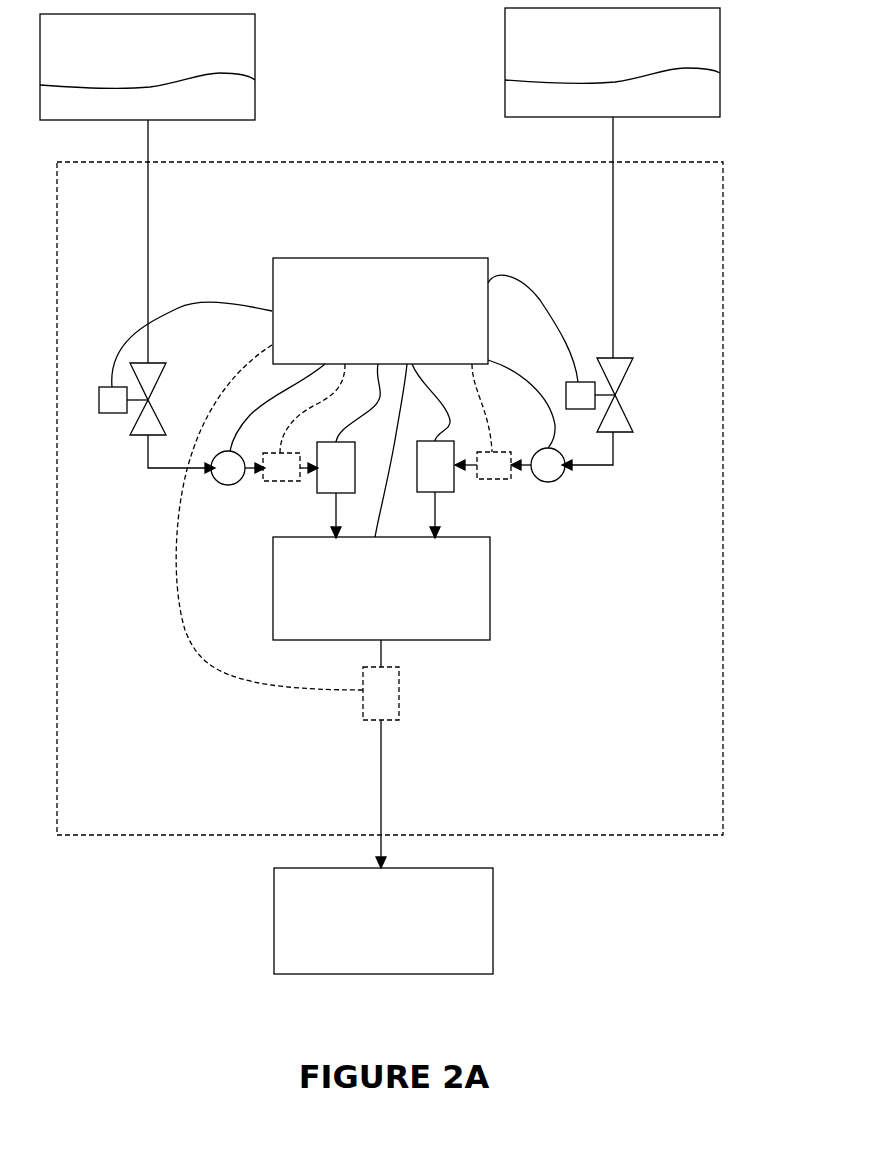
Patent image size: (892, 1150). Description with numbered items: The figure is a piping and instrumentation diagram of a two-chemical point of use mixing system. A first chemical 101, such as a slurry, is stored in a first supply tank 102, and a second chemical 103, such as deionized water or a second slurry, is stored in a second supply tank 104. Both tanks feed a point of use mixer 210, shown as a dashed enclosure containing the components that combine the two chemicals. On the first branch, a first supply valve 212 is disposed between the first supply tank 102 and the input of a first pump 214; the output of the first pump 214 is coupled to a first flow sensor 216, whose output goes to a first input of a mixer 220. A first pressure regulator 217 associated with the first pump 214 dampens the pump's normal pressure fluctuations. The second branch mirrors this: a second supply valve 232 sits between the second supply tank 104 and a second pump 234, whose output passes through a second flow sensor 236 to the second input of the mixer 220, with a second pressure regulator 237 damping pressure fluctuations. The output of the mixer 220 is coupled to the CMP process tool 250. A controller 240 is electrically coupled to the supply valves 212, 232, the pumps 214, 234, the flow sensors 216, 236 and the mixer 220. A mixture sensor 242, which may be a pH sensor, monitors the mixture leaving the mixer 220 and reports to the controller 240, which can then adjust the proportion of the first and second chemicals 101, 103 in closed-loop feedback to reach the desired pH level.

The first chemical 101 is at (238, 102).
The first supply tank 102 is at (255, 14).
The second chemical 103 is at (703, 103).
The second supply tank 104 is at (720, 14).
The point of use mixer 210 is at (723, 270).
The first supply valve 212 is at (99, 400).
The first pump 214 is at (225, 486).
The first flow sensor 216 is at (315, 485).
The first pressure regulator 217 is at (270, 483).
The mixer 220 is at (490, 605).
The second supply valve 232 is at (633, 360).
The second pump 234 is at (565, 475).
The second flow sensor 236 is at (457, 483).
The second pressure regulator 237 is at (505, 478).
The controller 240 is at (283, 258).
The mixture sensor 242 is at (399, 690).
The CMP process tool 250 is at (493, 918).